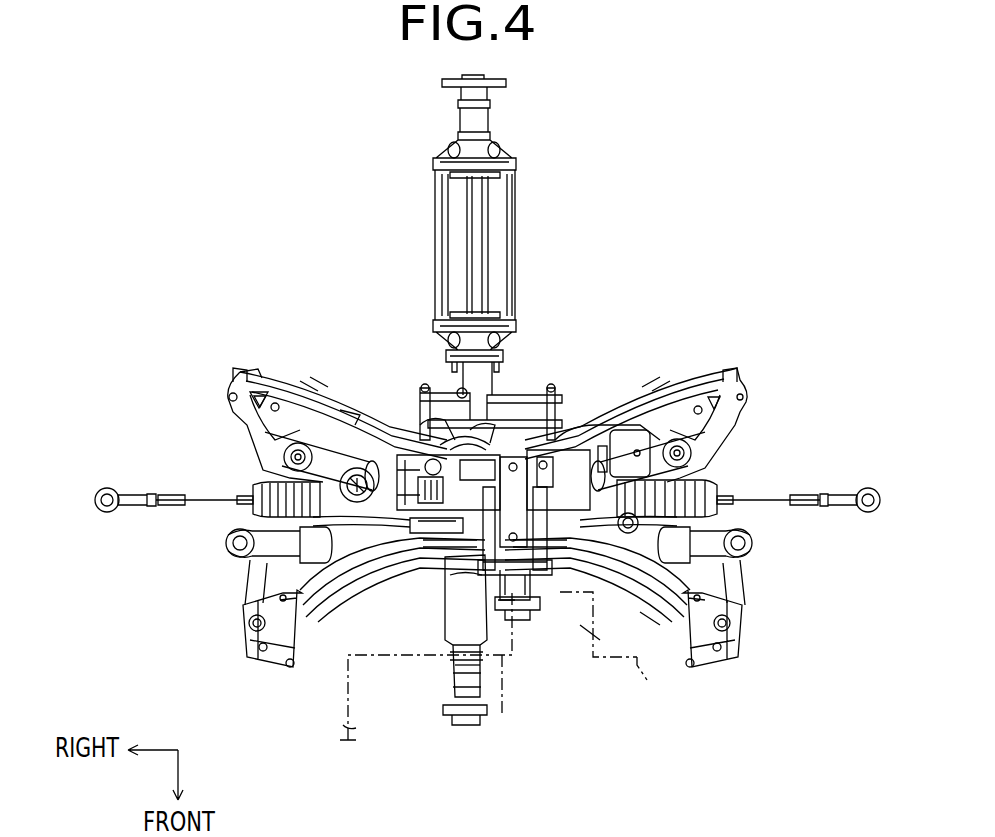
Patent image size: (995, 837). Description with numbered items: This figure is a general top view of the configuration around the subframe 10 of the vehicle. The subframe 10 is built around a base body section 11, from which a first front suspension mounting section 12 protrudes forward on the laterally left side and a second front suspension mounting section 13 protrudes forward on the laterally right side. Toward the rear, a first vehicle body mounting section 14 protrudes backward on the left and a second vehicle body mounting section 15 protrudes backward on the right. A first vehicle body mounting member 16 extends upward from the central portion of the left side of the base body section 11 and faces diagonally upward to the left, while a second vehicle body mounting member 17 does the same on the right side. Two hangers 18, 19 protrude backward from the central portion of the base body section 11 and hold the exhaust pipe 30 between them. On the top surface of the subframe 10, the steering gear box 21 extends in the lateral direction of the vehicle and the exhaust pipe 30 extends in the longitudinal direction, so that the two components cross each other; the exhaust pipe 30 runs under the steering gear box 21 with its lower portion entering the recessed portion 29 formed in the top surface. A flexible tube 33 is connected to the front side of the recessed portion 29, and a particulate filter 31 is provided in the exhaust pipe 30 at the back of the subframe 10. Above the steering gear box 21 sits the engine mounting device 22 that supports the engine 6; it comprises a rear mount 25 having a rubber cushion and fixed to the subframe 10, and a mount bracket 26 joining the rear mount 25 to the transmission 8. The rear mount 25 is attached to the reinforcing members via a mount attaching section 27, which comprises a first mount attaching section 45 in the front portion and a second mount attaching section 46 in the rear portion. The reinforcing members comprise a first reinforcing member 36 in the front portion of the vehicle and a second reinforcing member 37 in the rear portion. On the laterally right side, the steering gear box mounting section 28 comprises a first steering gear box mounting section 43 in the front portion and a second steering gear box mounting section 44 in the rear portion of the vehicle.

The engine 6 is at (345, 702).
The transmission 8 is at (637, 662).
The subframe 10 is at (807, 177).
The base body section 11 is at (600, 405).
The first front suspension mounting section 12 is at (728, 645).
The second front suspension mounting section 13 is at (240, 645).
The first vehicle body mounting section 14 is at (730, 372).
The second vehicle body mounting section 15 is at (238, 385).
The first vehicle body mounting member 16 is at (700, 547).
The second vehicle body mounting member 17 is at (277, 543).
The hanger 18 is at (450, 470).
The hanger 19 is at (553, 388).
The steering gear box 21 is at (345, 480).
The engine mounting device 22 is at (531, 629).
The rear mount 25 is at (523, 440).
The mount bracket 26 is at (527, 598).
The mount attaching section 27 is at (253, 202).
The steering gear box mounting section 28 is at (140, 267).
The recessed portion 29 is at (519, 449).
The exhaust pipe 30 is at (482, 672).
The particulate filter 31 is at (510, 245).
The flexible tube 33 is at (467, 602).
The first reinforcing member 36 is at (412, 533).
The second reinforcing member 37 is at (560, 427).
The first steering gear box mounting section 43 is at (262, 400).
The second steering gear box mounting section 44 is at (352, 417).
The first mount attaching section 45 is at (440, 445).
The second mount attaching section 46 is at (490, 453).